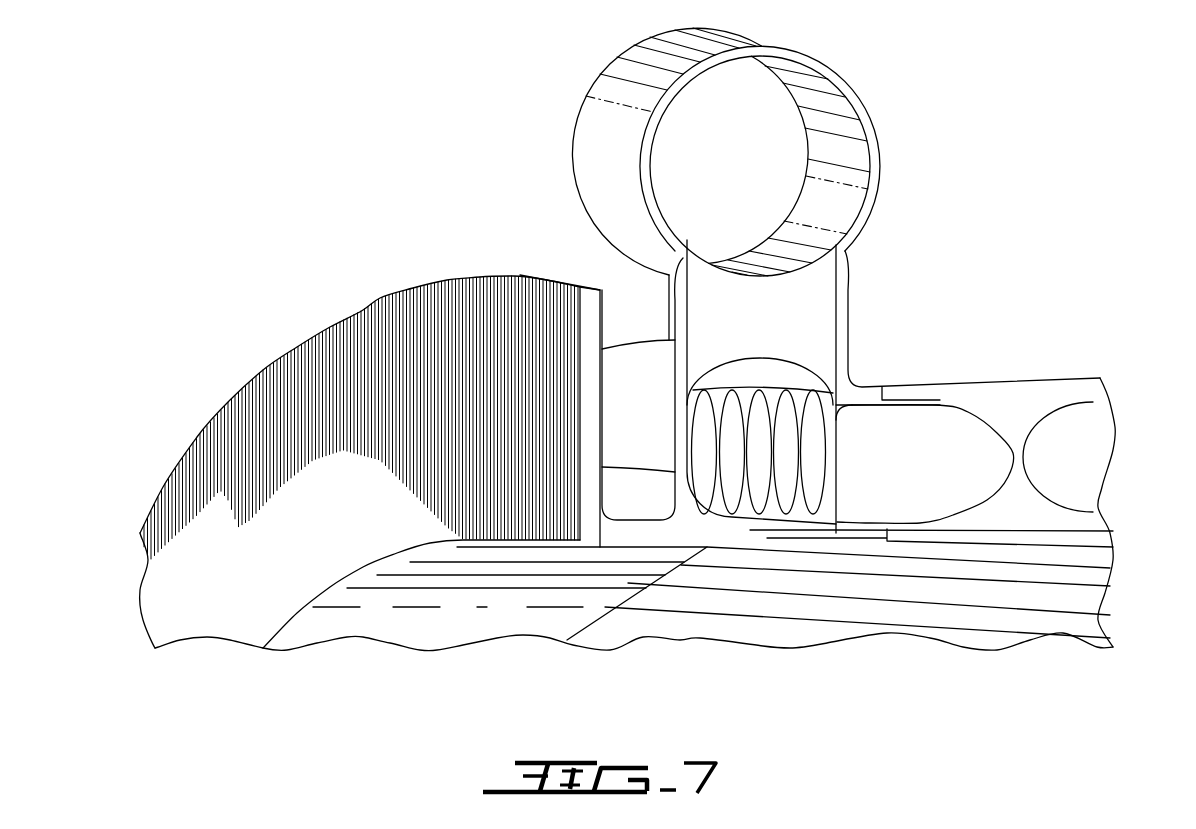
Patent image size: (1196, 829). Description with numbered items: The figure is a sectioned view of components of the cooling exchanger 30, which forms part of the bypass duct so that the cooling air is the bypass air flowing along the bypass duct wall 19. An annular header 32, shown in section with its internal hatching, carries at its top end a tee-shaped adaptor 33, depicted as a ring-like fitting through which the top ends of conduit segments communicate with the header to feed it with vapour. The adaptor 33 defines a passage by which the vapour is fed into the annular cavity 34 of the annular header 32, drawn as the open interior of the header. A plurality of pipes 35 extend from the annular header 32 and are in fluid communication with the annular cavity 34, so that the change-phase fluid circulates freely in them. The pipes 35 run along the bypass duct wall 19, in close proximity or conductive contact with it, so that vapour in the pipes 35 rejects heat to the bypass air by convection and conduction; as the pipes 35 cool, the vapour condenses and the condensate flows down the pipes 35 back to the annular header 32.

The bypass duct wall 19 is at (1073, 620).
The cooling exchanger 30 is at (1140, 330).
The annular header 32 is at (242, 603).
The adaptor 33 is at (813, 63).
The annular cavity 34 is at (737, 522).
The pipes 35 is at (963, 563).